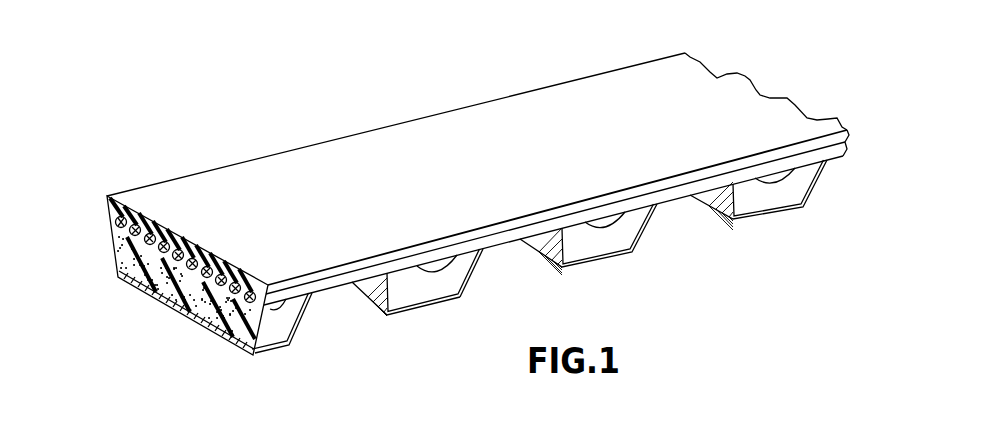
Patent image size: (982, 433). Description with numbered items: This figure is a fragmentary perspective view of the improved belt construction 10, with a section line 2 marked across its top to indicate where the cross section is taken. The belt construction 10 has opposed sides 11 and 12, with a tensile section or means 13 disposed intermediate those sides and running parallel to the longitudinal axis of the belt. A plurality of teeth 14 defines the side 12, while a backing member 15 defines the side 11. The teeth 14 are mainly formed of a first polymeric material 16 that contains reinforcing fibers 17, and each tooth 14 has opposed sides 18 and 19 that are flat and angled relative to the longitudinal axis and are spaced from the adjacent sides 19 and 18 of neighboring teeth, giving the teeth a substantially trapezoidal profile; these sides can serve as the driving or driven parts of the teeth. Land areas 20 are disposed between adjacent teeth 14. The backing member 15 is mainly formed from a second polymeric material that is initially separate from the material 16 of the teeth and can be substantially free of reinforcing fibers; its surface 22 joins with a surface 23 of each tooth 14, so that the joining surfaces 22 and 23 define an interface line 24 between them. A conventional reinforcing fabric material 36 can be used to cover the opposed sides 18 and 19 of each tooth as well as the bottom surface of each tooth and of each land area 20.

The belt construction 10 is at (795, 92).
The side 11 is at (808, 124).
The side 12 is at (795, 212).
The tensile section 13 is at (114, 220).
The teeth 14 is at (425, 314).
The backing member 15 is at (452, 118).
The first polymeric material 16 is at (142, 286).
The reinforcing fibers 17 is at (208, 327).
The side of tooth 18 is at (382, 307).
The side of tooth 19 is at (471, 276).
The land areas 20 is at (681, 210).
The surface 22 is at (130, 262).
The surface 23 is at (163, 247).
The interface line 24 is at (172, 303).
The reinforcing fabric material 36 is at (232, 340).
The section line 2- 2 is at (326, 203).